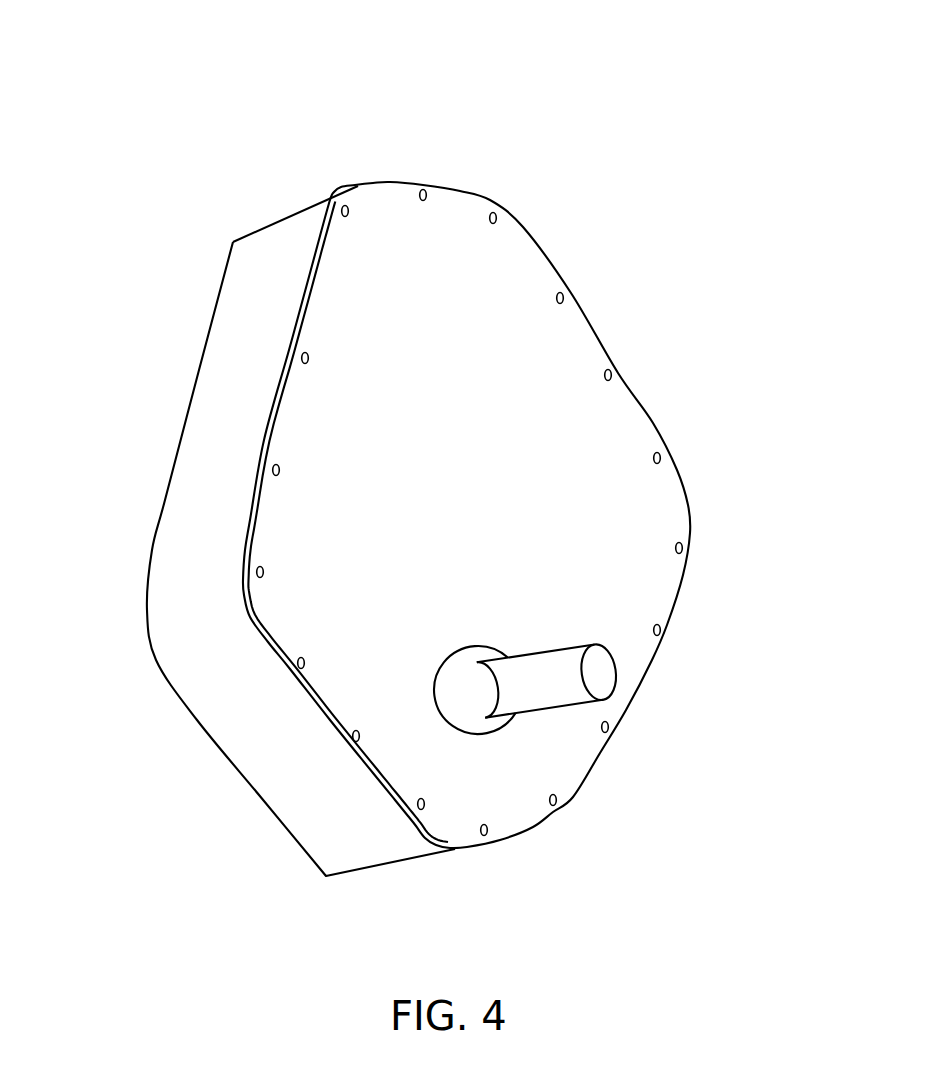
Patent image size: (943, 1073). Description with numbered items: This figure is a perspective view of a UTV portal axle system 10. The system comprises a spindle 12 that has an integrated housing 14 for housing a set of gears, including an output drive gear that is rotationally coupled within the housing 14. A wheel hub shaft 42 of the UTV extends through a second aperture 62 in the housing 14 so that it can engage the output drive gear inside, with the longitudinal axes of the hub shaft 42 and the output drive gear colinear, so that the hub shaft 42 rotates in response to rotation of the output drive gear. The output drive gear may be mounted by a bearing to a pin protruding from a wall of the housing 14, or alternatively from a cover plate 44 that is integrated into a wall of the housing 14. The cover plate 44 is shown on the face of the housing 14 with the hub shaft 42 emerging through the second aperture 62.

The UTV portal axle system 10 is at (230, 98).
The spindle 12 is at (495, 273).
The housing 14 is at (592, 475).
The wheel hub shaft 42 is at (555, 692).
The cover plate 44 is at (315, 275).
The second aperture 62 is at (485, 717).